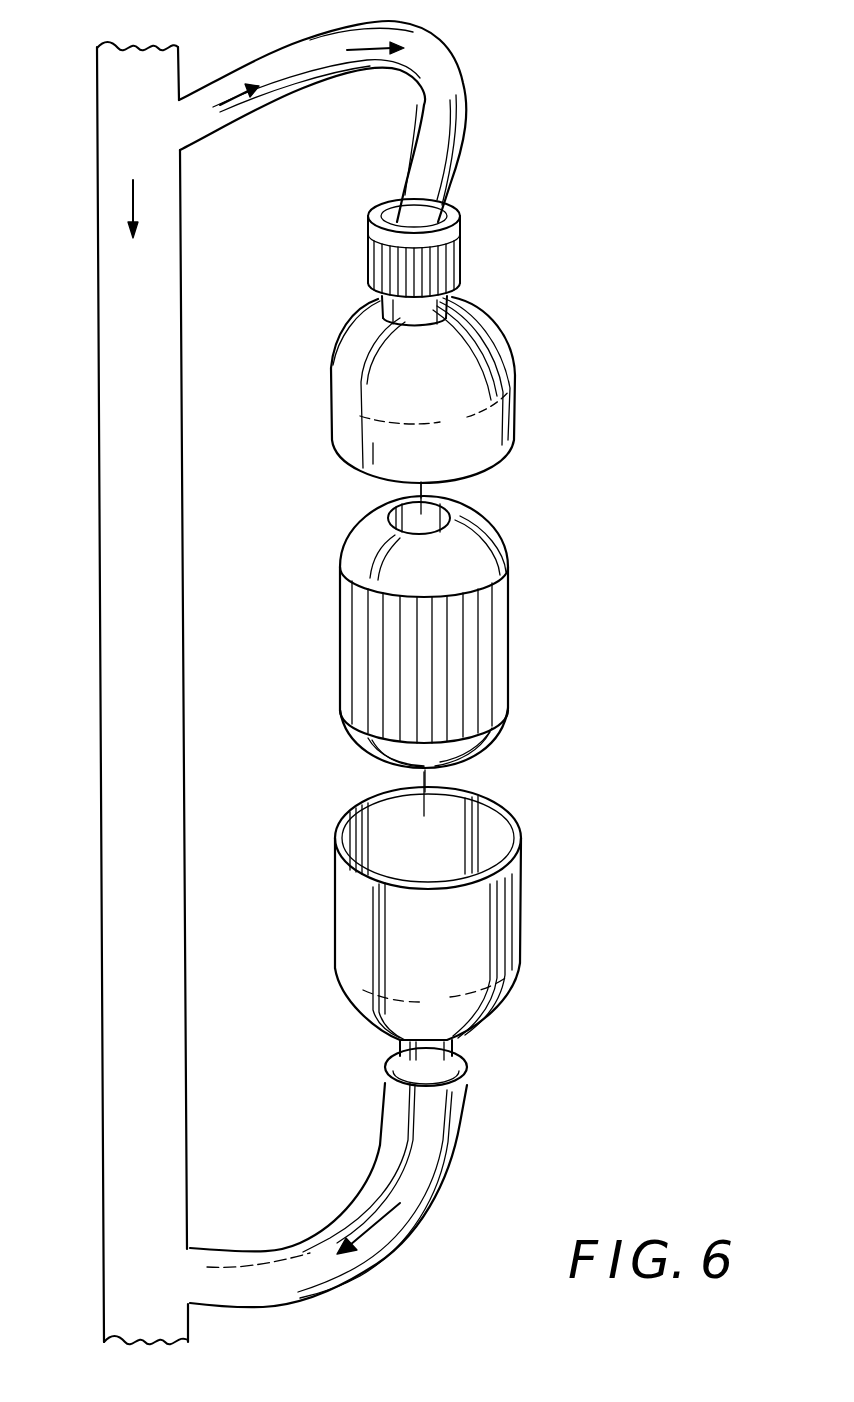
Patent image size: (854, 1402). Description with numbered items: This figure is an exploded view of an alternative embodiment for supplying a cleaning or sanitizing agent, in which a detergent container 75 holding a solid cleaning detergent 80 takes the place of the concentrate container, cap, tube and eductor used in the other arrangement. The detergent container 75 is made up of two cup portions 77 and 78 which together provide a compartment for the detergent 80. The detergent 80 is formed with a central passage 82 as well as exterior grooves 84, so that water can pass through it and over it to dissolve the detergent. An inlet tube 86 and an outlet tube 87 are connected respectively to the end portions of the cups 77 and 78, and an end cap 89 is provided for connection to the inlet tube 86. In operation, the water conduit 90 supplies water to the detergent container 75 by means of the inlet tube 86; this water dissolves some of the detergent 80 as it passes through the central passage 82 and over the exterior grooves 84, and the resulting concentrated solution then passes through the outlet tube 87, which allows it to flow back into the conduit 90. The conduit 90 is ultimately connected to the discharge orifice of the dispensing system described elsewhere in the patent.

The detergent container 75 is at (517, 363).
The cup portion 77 is at (342, 338).
The cup portion 78 is at (333, 900).
The solid cleaning detergent 80 is at (512, 635).
The central passage 82 is at (390, 513).
The exterior grooves 84 is at (497, 605).
The inlet tube 86 is at (322, 32).
The outlet tube 87 is at (247, 1253).
The end cap 89 is at (467, 212).
The water conduit 90 is at (180, 427).